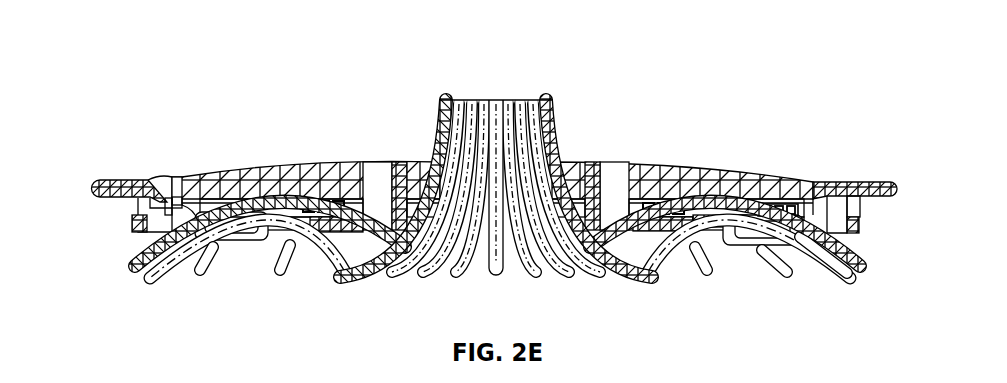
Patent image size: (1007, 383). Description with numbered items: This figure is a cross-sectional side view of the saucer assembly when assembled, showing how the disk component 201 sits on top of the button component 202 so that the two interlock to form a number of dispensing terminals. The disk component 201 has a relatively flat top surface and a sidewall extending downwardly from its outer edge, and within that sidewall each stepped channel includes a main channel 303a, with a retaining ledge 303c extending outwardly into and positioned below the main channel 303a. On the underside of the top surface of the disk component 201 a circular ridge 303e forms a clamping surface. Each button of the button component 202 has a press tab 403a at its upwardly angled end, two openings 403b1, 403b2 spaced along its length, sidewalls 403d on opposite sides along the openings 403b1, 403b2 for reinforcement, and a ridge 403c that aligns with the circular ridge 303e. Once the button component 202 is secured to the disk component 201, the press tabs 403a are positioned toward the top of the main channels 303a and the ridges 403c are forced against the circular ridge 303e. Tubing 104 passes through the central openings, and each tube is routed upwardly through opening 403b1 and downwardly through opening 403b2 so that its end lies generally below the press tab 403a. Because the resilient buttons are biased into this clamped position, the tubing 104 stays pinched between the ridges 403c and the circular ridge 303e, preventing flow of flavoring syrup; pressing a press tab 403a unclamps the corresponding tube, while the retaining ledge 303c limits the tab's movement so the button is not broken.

The tubing 104 is at (526, 72).
The disk component 201 is at (638, 163).
The button component 202 is at (722, 250).
The main channel 303a is at (862, 208).
The retaining ledge 303c is at (862, 230).
The circular ridge 303e is at (752, 208).
The press tab 403a is at (882, 182).
The opening 403b1 is at (712, 262).
The opening 403b2 is at (830, 222).
The ridge 403c is at (757, 215).
The sidewalls 403d is at (690, 182).